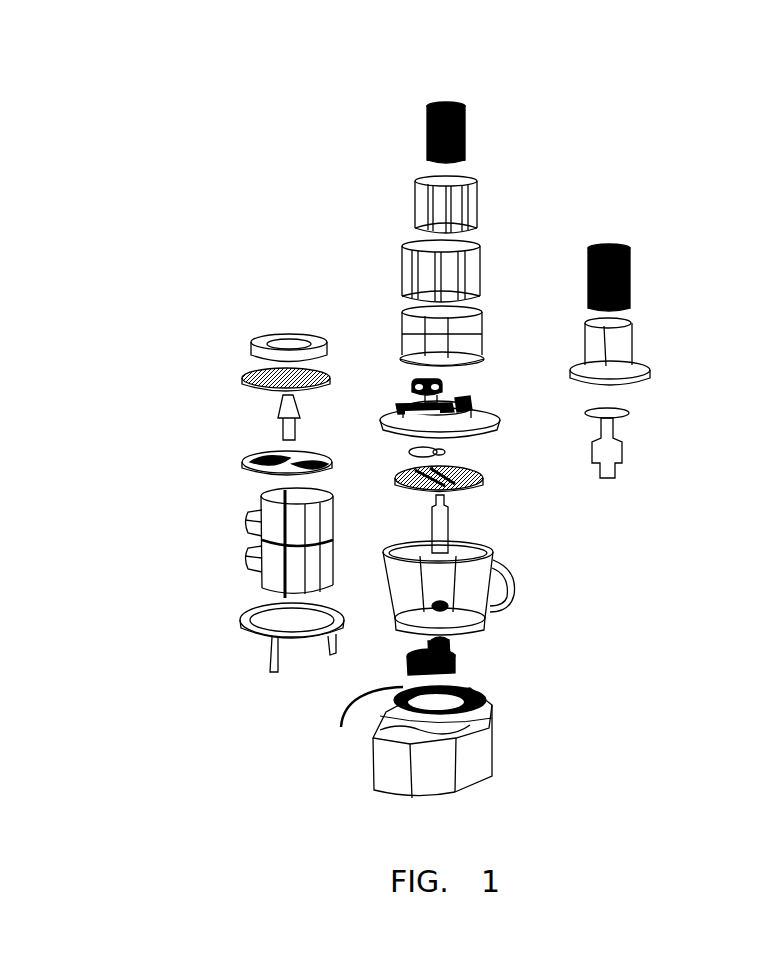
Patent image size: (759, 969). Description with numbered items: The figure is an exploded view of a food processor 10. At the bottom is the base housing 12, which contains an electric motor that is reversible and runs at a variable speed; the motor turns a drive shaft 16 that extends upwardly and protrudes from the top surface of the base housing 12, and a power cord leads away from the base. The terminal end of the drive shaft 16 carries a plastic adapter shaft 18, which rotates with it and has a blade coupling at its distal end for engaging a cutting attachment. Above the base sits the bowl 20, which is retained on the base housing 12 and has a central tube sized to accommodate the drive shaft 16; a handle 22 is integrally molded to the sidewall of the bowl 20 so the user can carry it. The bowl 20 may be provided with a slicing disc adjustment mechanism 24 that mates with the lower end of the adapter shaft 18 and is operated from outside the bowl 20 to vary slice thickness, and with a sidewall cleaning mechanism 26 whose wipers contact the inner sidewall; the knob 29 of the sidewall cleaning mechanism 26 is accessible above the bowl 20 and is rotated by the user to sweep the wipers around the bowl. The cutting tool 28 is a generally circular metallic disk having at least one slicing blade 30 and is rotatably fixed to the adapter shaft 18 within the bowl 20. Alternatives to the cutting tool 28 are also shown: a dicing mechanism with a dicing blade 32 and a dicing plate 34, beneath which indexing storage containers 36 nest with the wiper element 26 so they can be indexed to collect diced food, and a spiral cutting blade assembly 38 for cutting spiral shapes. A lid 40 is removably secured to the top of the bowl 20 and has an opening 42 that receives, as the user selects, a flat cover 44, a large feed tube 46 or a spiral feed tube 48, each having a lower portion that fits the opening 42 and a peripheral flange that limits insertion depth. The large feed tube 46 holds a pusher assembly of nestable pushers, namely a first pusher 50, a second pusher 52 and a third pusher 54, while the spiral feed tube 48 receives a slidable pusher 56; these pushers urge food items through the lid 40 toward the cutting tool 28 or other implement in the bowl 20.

The food processor 10 is at (650, 70).
The base housing 12 is at (494, 713).
The drive shaft 16 is at (365, 721).
The adapter shaft 18 is at (456, 532).
The bowl 20 is at (494, 628).
The handle 22 is at (512, 585).
The slicing disc adjustment mechanism 24 is at (458, 662).
The sidewall cleaning mechanism 26 is at (243, 617).
The cutting tool 28 is at (484, 498).
The knob 29 is at (455, 390).
The slicing blade 30 is at (483, 477).
The dicing blade 32 is at (240, 378).
The dicing plate 34 is at (240, 462).
The indexing storage containers 36 is at (243, 532).
The spiral cutting blade assembly 38 is at (626, 442).
The lid 40 is at (484, 448).
The opening 42 is at (472, 408).
The flat cover 44 is at (249, 342).
The large feed tube 46 is at (400, 324).
The spiral feed tube 48 is at (638, 345).
The first pusher 50 is at (400, 264).
The second pusher 52 is at (410, 203).
The third pusher 54 is at (470, 128).
The pusher 56 is at (636, 254).